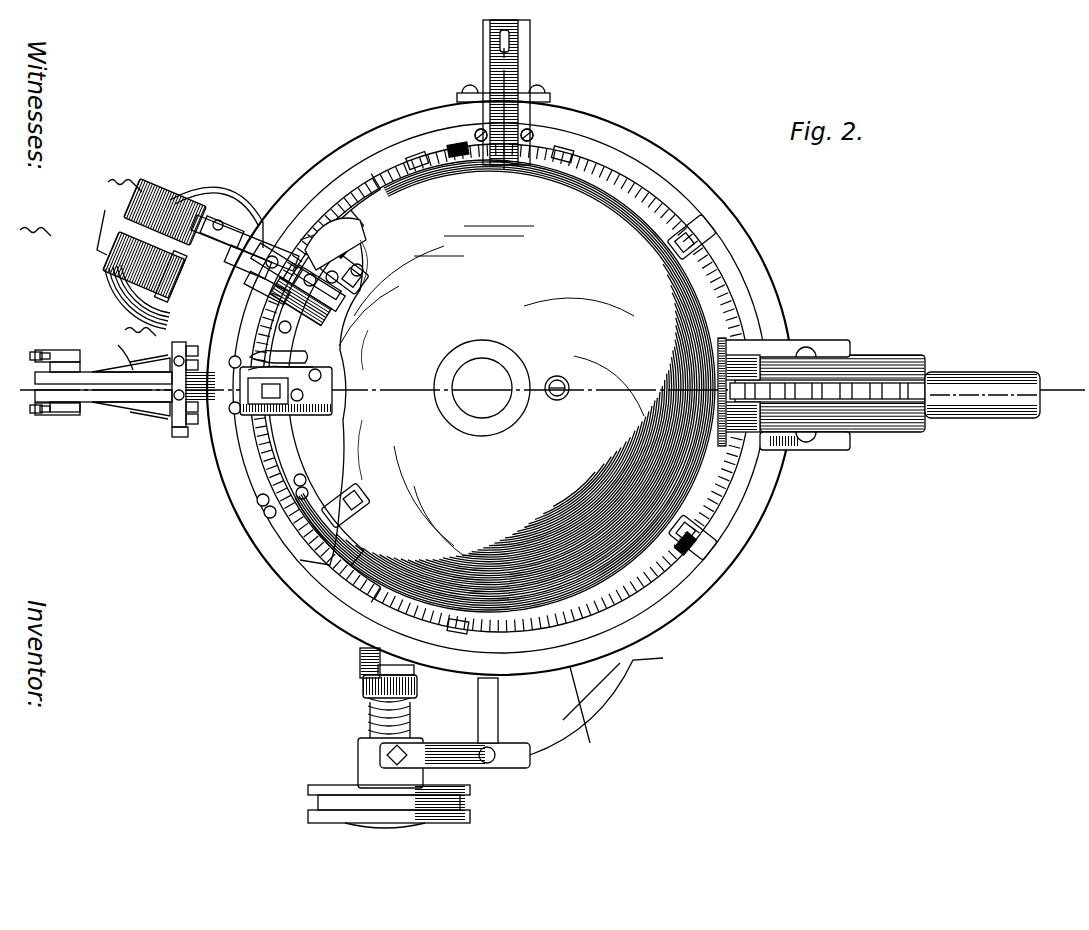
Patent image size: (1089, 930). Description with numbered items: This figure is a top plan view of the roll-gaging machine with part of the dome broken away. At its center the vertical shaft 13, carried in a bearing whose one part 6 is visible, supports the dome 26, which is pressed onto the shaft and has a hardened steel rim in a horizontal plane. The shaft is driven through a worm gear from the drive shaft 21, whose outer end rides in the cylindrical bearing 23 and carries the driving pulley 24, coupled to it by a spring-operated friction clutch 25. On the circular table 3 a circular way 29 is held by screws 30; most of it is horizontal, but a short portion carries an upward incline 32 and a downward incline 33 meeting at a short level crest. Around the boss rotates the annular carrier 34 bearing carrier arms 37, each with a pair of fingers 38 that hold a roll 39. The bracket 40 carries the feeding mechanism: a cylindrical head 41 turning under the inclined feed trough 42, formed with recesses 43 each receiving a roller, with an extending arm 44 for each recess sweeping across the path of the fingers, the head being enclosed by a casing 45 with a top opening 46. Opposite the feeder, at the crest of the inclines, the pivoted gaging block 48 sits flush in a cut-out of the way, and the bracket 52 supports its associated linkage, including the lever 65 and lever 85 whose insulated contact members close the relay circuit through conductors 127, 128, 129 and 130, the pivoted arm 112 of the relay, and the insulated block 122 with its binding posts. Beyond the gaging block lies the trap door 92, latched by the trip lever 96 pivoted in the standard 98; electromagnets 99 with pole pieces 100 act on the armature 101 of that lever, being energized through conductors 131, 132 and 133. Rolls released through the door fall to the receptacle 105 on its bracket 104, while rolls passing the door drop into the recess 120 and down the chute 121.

The circular table 3 is at (693, 196).
The bearing part 6 is at (460, 27).
The shaft 13 is at (501, 388).
The drive shaft 21 is at (363, 684).
The cylindrical bearing 23 is at (360, 660).
The driving pulley 24 is at (420, 804).
The spring-operated friction clutch 25 is at (372, 775).
The dome 26 is at (489, 386).
The circular way 29 is at (642, 193).
The screws 30 is at (300, 510).
The upward incline 32 is at (270, 470).
The downward incline 33 is at (262, 356).
The carrier 34 is at (330, 318).
The carrier arms 37 is at (325, 386).
The fingers 38 is at (700, 300).
The roll 39 is at (515, 44).
The bracket 40 is at (835, 345).
The cylindrical head 41 is at (758, 384).
The feed trough 42 is at (960, 390).
The recesses 43 is at (740, 440).
The extending arm 44 is at (740, 360).
The casing 45 is at (758, 430).
The opening 46 is at (800, 350).
The gaging block 48 is at (270, 366).
The bracket 52 is at (112, 405).
The lever 65 is at (96, 372).
The lever 85 is at (80, 412).
The trap door 92 is at (298, 276).
The trip lever 96 is at (292, 224).
The standard 98 is at (232, 292).
The electromagnets 99 is at (150, 207).
The pole pieces 100 is at (224, 220).
The armature 101 is at (252, 250).
The bracket 104 is at (222, 184).
The receptacle 105 is at (160, 294).
The pivoted arm 112 is at (198, 432).
The recess 120 is at (508, 124).
The chute 121 is at (512, 78).
The insulated block 122 is at (148, 420).
The conductor 127 is at (120, 404).
The conductor 128 is at (34, 414).
The conductor 129 is at (36, 352).
The conductor 130 is at (118, 345).
The conductor 131 is at (178, 438).
The conductor 132 is at (96, 250).
The conductor 133 is at (128, 180).